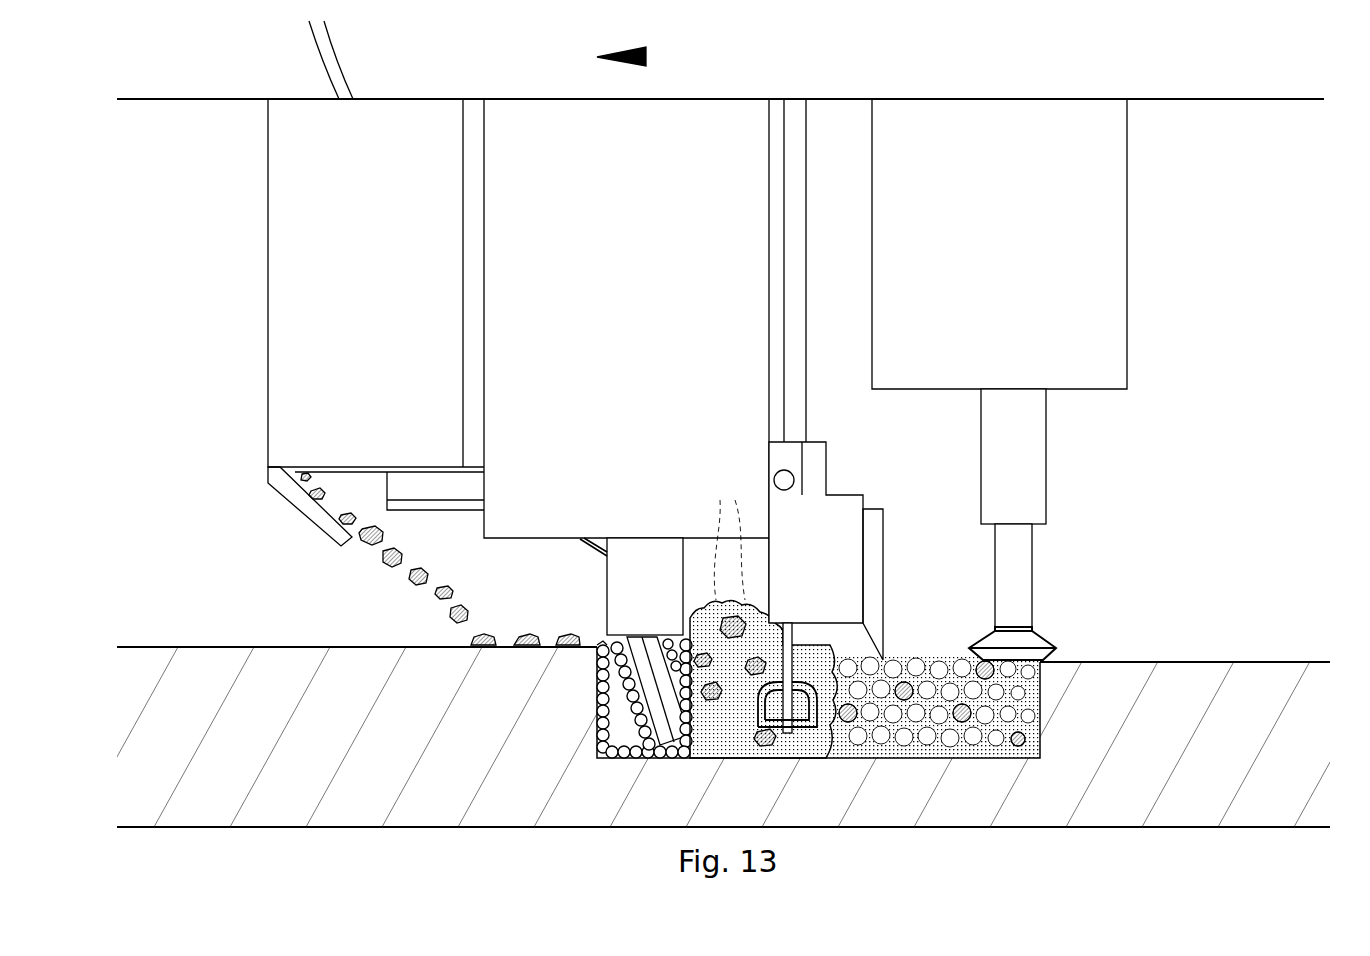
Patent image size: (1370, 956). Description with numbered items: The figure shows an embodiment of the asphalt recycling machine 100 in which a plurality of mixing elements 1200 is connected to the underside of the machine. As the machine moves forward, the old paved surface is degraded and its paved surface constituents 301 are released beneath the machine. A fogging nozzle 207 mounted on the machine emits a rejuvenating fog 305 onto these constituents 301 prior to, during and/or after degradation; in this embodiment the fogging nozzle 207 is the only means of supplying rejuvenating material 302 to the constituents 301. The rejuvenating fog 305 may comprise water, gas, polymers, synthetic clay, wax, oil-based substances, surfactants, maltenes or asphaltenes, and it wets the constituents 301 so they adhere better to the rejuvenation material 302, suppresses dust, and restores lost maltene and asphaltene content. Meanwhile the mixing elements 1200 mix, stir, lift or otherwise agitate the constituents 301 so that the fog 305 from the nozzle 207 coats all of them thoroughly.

The ground working machine 100 is at (505, 85).
The fogging nozzle 207 is at (598, 538).
The rejuvenating fog 305 is at (712, 603).
The paved surface constituents 301 is at (763, 617).
The rejuvenation material 302 is at (902, 660).
The mixing elements 1200 is at (823, 760).